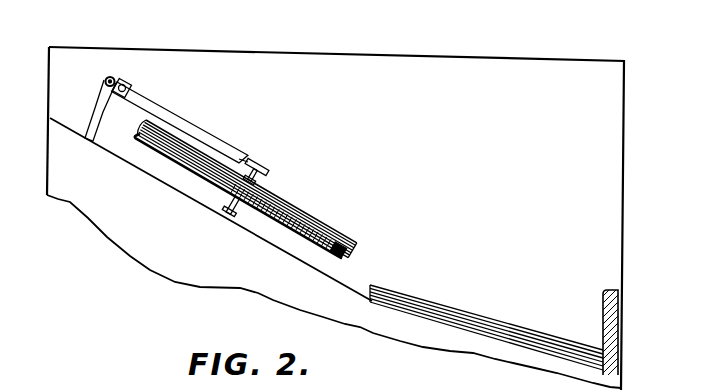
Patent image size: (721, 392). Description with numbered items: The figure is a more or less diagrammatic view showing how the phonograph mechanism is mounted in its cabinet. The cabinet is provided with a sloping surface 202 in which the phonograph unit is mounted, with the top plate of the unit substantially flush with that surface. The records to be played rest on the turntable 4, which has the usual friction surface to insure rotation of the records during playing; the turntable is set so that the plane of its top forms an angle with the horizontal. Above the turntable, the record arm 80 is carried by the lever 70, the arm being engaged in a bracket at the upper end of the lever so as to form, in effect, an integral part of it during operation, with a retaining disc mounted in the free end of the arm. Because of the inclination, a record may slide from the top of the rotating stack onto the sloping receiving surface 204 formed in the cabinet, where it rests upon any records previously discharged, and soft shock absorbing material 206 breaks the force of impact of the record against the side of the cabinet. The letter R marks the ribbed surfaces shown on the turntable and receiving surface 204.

The turntable 4 is at (299, 215).
The lever 70 is at (97, 114).
The record arm 80 is at (190, 122).
The ribbed surface R is at (303, 210).
The sloping surface 202 is at (272, 246).
The sloping receiving surface 204 is at (366, 298).
The soft shock absorbing material 206 is at (603, 306).